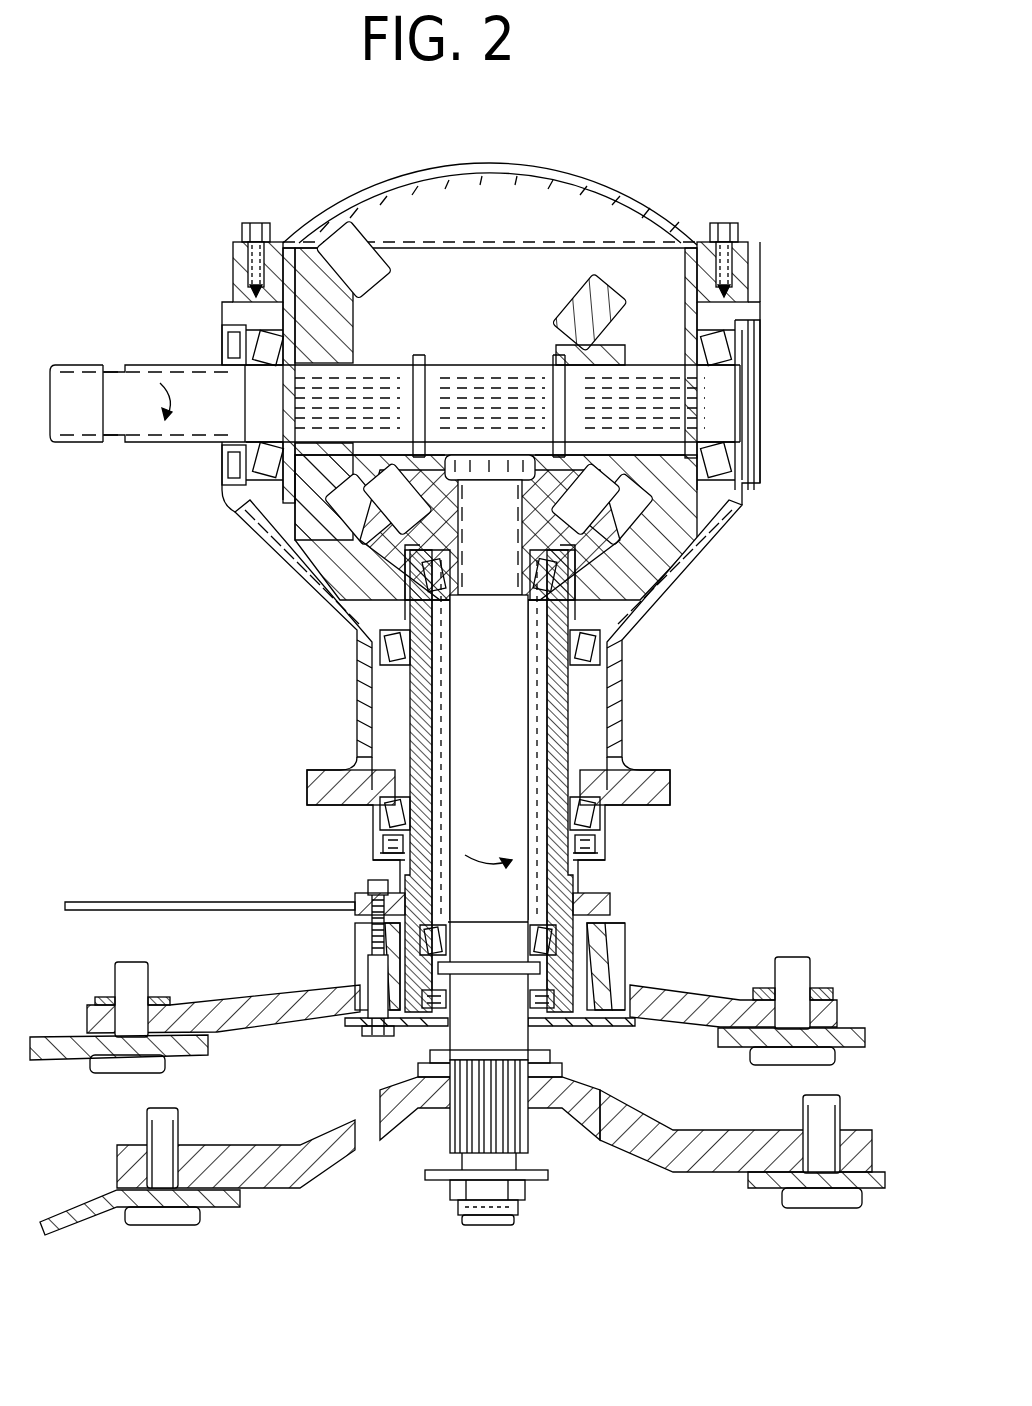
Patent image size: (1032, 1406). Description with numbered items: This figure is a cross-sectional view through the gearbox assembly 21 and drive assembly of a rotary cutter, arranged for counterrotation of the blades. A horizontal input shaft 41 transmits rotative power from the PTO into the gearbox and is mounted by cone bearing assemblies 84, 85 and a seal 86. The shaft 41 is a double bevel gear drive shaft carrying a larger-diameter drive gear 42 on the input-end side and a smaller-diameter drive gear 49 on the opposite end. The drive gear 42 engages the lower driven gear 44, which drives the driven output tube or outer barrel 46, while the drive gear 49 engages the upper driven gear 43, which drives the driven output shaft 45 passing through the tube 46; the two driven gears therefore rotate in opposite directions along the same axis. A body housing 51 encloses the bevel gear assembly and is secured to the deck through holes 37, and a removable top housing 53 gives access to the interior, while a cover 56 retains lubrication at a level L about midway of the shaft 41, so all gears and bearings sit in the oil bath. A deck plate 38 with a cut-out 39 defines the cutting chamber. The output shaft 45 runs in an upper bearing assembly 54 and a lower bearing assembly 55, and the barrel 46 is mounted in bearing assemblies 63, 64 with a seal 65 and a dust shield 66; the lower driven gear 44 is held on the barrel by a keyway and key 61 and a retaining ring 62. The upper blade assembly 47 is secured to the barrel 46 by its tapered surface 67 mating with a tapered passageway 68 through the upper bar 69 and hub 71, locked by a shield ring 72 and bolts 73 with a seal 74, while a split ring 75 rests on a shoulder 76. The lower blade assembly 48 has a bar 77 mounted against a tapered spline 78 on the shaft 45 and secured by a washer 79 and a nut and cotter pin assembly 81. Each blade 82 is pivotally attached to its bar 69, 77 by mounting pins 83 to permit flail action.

The gearbox assembly 21 is at (782, 298).
The holes 37 is at (333, 780).
The deck plate 38 is at (125, 900).
The cut-out 39 is at (340, 902).
The input shaft 41 is at (86, 388).
The larger-diameter drive gear 42 is at (338, 320).
The upper driven gear 43 is at (402, 500).
The lower driven gear 44 is at (625, 548).
The driven output shaft 45 is at (505, 757).
The driven output tube 46 is at (562, 715).
The upper blade assembly 47 is at (75, 1008).
The lower blade assembly 48 is at (112, 1165).
The smaller-diameter drive gear 49 is at (600, 330).
The body housing 51 is at (735, 508).
The removable top housing 53 is at (752, 248).
The upper bearing assembly 54 is at (568, 590).
The lower bearing assembly 55 is at (586, 938).
The cover 56 is at (565, 175).
The keyway and key 61 is at (572, 605).
The retaining ring 62 is at (598, 522).
The bearing assembly 63 is at (603, 650).
The bearing assembly 64 is at (598, 812).
The seal 65 is at (598, 842).
The dust shield 66 is at (598, 858).
The tapered surface 67 is at (622, 955).
The tapered passageway 68 is at (556, 1015).
The upper bar 69 is at (706, 1000).
The hub 71 is at (600, 975).
The shield ring 72 is at (428, 1030).
The bolts 73 is at (370, 1000).
The seal 74 is at (540, 1028).
The split ring 75 is at (612, 905).
The shoulder 76 is at (615, 990).
The bar 77 is at (710, 1140).
The tapered spline 78 is at (530, 1112).
The washer 79 is at (440, 1178).
The nut and cotter pin assembly 81 is at (528, 1195).
The blade 82 is at (50, 1050).
The mounting pins 83 is at (140, 975).
The cone bearing assembly 84 is at (250, 320).
The cone bearing assembly 85 is at (738, 330).
The seal 86 is at (228, 466).
The lubrication level L is at (722, 392).